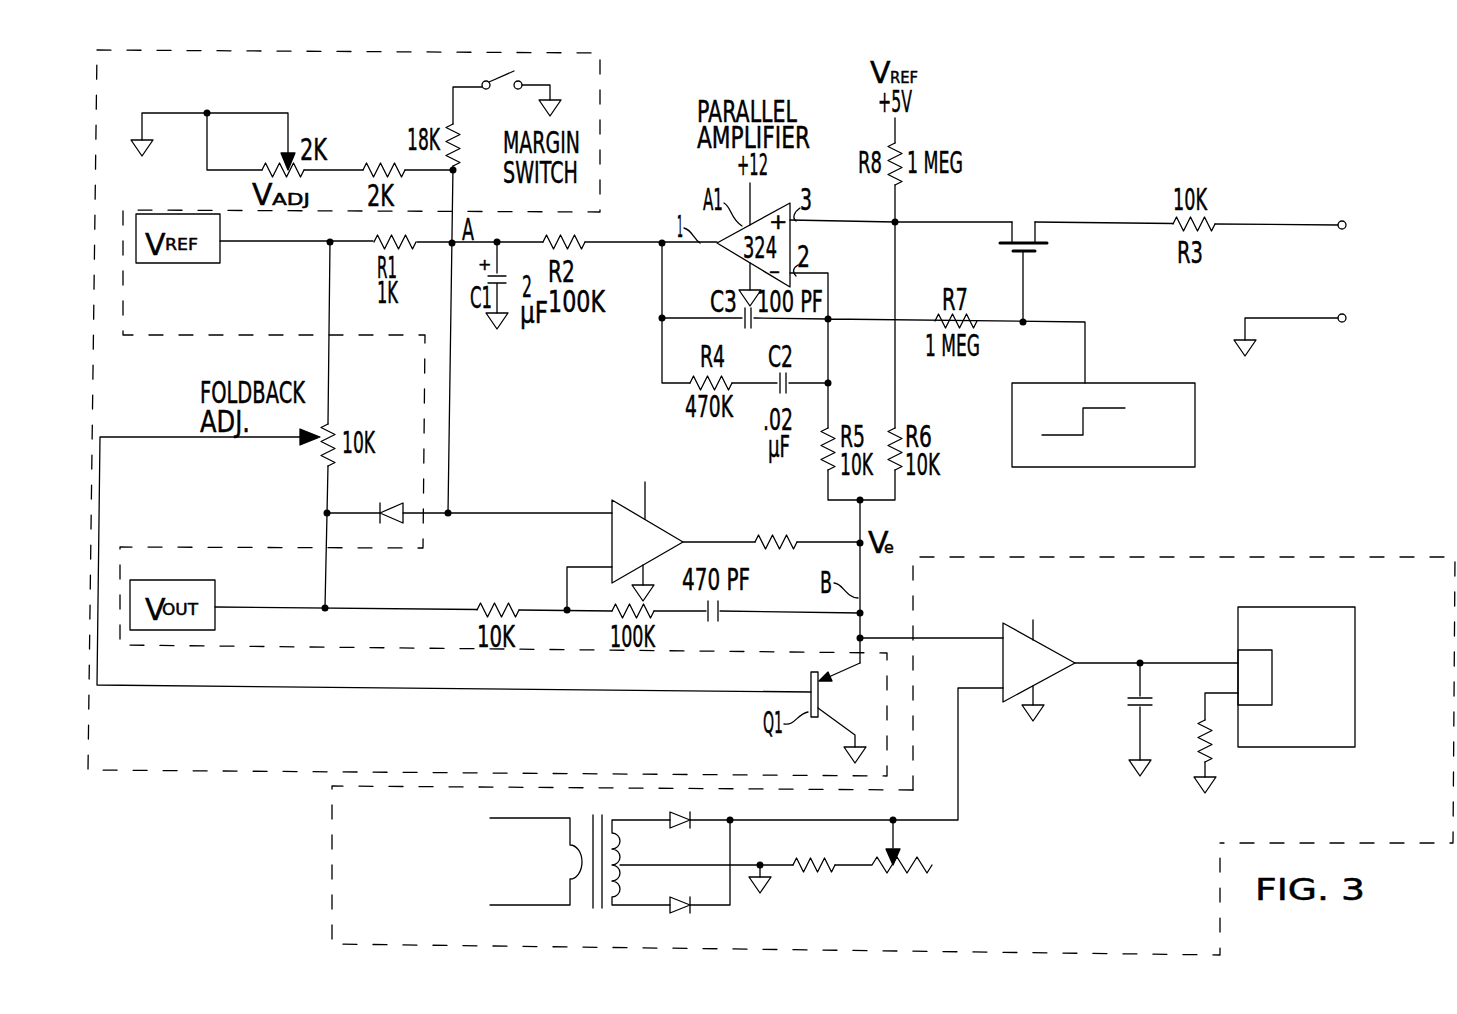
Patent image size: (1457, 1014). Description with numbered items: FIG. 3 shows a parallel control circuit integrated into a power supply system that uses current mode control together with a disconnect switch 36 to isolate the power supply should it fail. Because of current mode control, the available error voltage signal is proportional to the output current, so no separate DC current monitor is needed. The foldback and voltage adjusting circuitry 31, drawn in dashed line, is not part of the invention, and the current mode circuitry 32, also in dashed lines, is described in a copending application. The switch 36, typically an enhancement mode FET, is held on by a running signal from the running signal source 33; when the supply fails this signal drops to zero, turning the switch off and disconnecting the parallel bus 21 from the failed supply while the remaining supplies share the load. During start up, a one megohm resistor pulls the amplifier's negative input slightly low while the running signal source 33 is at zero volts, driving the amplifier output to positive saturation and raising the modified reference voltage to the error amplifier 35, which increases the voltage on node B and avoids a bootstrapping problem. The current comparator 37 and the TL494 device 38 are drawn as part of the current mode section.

The parallel bus 21 is at (1341, 220).
The foldback and voltage adjusting circuitry 31 is at (190, 768).
The current mode circuitry 32 is at (332, 898).
The running signal source 33 is at (1196, 443).
The error amplifier 35 is at (657, 527).
The disconnect switch 36 is at (1022, 215).
The current comparator 37 is at (1053, 652).
The TL494 pulse width modulator oscillator 38 is at (1245, 620).